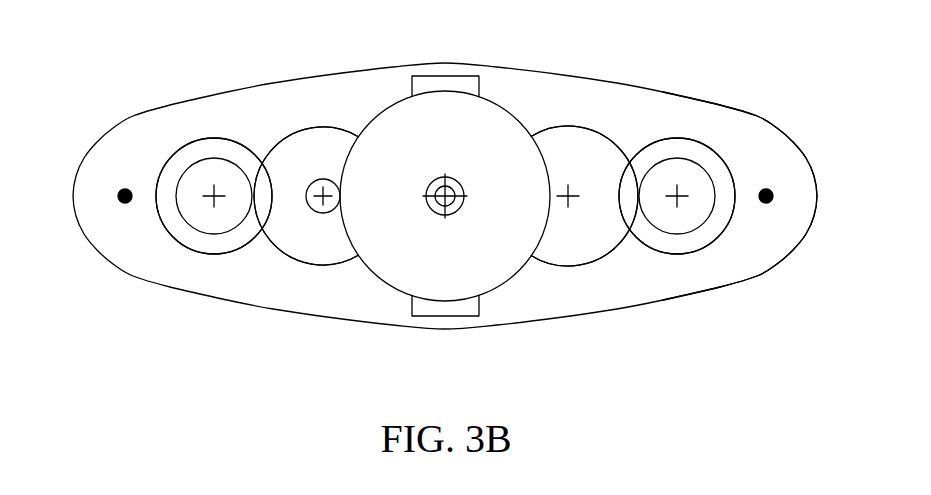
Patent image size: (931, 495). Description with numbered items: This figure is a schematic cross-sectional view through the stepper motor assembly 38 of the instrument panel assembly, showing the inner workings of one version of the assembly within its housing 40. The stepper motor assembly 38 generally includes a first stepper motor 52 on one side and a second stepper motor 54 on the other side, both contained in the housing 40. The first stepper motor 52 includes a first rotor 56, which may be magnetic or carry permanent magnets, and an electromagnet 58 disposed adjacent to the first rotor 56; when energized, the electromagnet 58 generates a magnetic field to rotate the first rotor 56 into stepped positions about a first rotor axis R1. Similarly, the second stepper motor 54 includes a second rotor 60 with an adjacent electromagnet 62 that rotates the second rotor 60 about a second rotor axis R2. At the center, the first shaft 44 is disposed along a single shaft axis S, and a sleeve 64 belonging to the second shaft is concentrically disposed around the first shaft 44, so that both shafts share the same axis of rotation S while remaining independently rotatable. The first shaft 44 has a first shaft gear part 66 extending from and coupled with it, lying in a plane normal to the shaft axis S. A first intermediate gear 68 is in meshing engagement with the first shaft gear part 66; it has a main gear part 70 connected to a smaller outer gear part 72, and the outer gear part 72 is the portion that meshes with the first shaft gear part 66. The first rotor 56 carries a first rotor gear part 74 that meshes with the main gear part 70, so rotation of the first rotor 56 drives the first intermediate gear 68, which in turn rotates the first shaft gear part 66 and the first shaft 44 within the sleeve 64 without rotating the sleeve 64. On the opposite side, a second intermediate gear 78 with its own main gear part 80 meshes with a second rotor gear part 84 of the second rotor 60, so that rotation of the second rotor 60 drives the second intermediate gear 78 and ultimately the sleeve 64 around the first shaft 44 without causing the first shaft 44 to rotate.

The stepper motor assembly 38 is at (629, 65).
The housing 40 is at (793, 140).
The first shaft 44 is at (437, 213).
The first stepper motor 52 is at (148, 253).
The second stepper motor 54 is at (723, 263).
The first rotor 56 is at (208, 248).
The electromagnets 58 is at (118, 196).
The second rotor 60 is at (678, 248).
The electromagnets 62 is at (773, 197).
The sleeve 64 is at (452, 181).
The first shaft gear part 66 is at (378, 132).
The first intermediate gear 68 is at (275, 118).
The main gear part 70 is at (325, 135).
The outer gear part 72 is at (317, 203).
The first rotor gear part 74 is at (222, 178).
The second intermediate gear 78 is at (580, 282).
The main gear part 80 is at (563, 135).
The second rotor gear part 84 is at (677, 167).
The first rotor axis R1 is at (212, 195).
The second rotor axis R2 is at (687, 192).
The shaft axis S is at (453, 203).